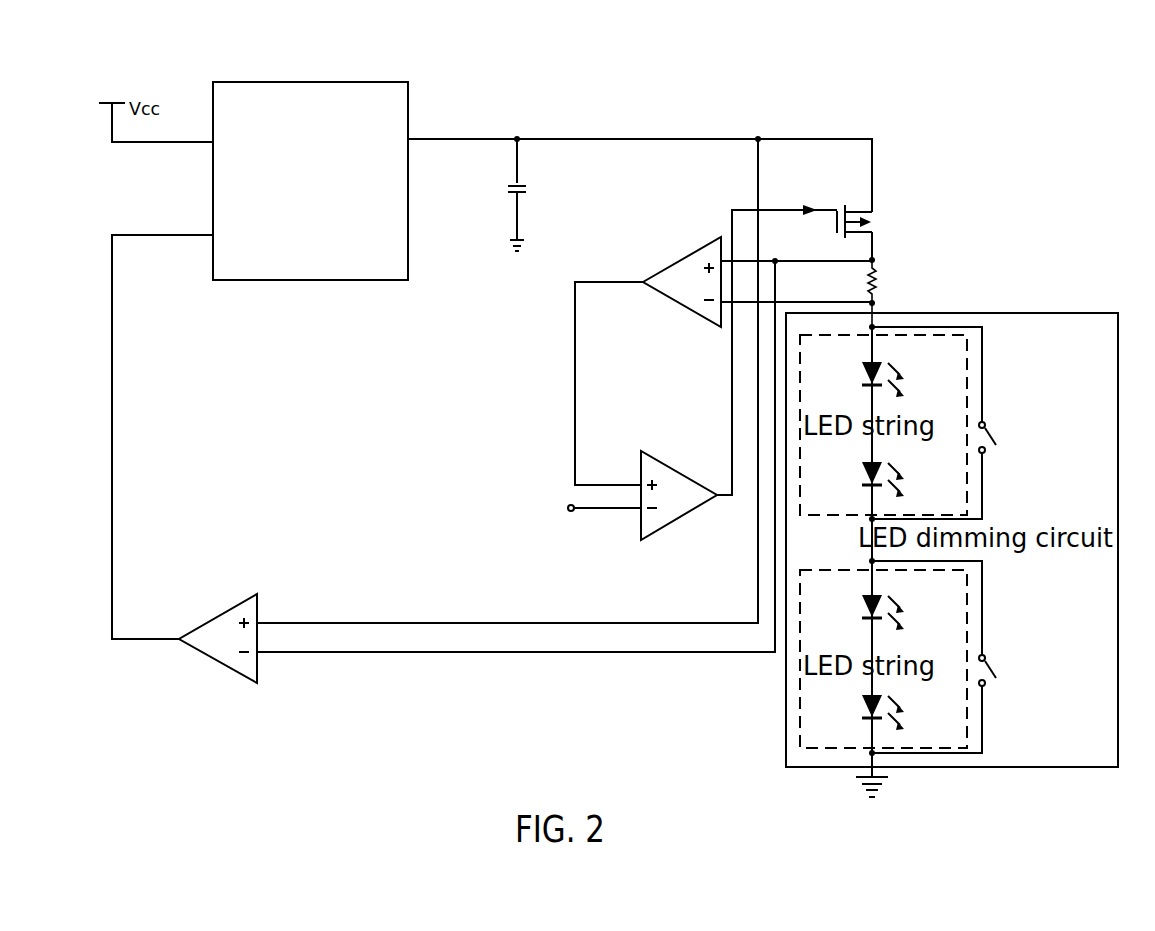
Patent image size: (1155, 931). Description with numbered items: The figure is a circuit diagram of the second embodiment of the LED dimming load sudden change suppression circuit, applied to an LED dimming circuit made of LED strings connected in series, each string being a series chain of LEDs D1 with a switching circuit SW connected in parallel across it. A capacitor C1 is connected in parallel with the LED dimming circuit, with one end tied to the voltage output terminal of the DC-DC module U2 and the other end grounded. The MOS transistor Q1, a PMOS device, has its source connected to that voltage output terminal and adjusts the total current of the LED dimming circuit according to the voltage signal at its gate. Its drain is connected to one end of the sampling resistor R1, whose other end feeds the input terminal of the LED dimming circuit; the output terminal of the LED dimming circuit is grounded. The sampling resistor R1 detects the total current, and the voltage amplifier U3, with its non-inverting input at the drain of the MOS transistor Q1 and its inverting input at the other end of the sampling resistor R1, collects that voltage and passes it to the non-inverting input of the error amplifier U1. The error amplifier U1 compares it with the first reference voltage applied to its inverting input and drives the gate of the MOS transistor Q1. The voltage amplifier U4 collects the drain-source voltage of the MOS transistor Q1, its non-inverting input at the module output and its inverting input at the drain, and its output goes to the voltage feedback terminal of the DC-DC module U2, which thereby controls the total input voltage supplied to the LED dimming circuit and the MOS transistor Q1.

The DC-DC module U2 is at (310, 165).
The capacitor C1 is at (531, 195).
The MOS transistor Q1 is at (873, 232).
The sampling resistor R1 is at (891, 292).
The voltage amplifier U3 is at (682, 285).
The error amplifier U1 is at (632, 493).
The voltage amplifier U4 is at (218, 637).
The LED D1 is at (901, 547).
The switching circuit SW is at (954, 540).